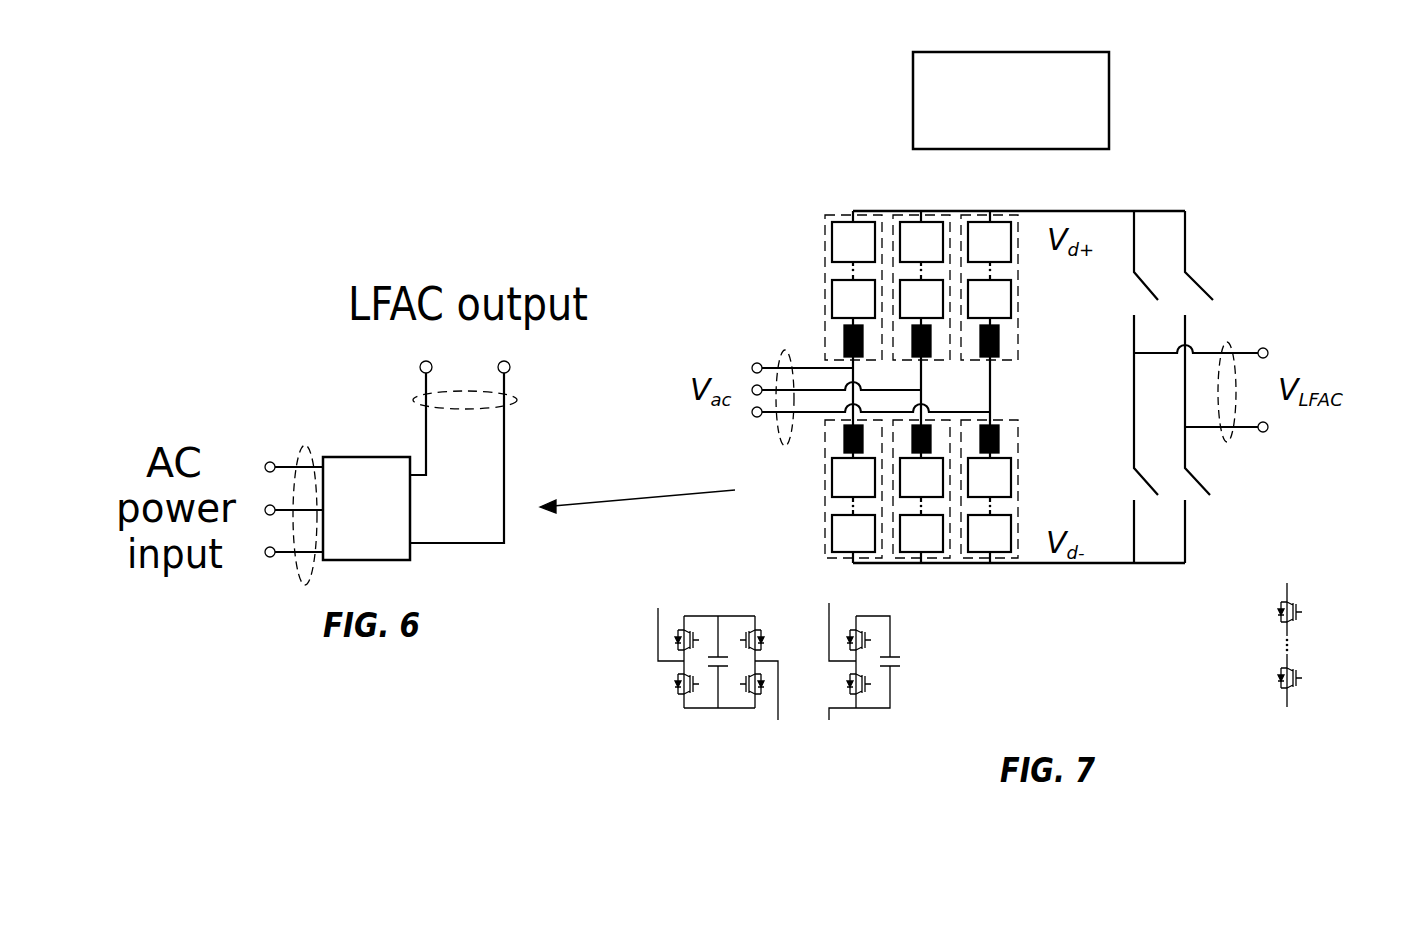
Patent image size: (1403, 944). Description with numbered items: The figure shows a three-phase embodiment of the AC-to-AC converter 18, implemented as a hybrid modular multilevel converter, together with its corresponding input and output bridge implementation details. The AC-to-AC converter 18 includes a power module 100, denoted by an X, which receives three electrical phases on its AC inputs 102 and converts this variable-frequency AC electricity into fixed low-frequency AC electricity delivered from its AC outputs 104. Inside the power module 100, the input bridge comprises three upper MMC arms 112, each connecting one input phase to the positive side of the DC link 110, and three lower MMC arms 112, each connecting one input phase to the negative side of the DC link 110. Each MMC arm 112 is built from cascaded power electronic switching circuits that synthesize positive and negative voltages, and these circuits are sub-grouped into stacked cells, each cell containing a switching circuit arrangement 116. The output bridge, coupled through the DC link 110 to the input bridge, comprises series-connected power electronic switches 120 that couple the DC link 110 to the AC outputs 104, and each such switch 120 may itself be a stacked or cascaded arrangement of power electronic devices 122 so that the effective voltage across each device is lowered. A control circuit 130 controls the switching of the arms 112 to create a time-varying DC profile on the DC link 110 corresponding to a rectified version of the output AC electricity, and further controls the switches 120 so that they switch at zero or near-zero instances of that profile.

In FIG. 6, the AC-to-AC converter 18 is at (297, 413).
In FIG. 6, the power module 100 is at (385, 563).
In FIG. 6, the AC inputs 102 is at (300, 568).
In FIG. 7, the AC inputs 102 is at (780, 435).
In FIG. 6, the AC outputs 104 is at (517, 398).
In FIG. 7, the AC outputs 104 is at (1227, 440).
In FIG. 7, the DC link 110 is at (1088, 211).
In FIG. 7, the MMC arms 112 is at (825, 282).
In FIG. 7, the switching circuit arrangement 116 is at (826, 535).
In FIG. 7, the power electronic switches 120 is at (1200, 291).
In FIG. 7, the power electronic devices 122 is at (1207, 512).
In FIG. 7, the control circuit 130 is at (1011, 100).